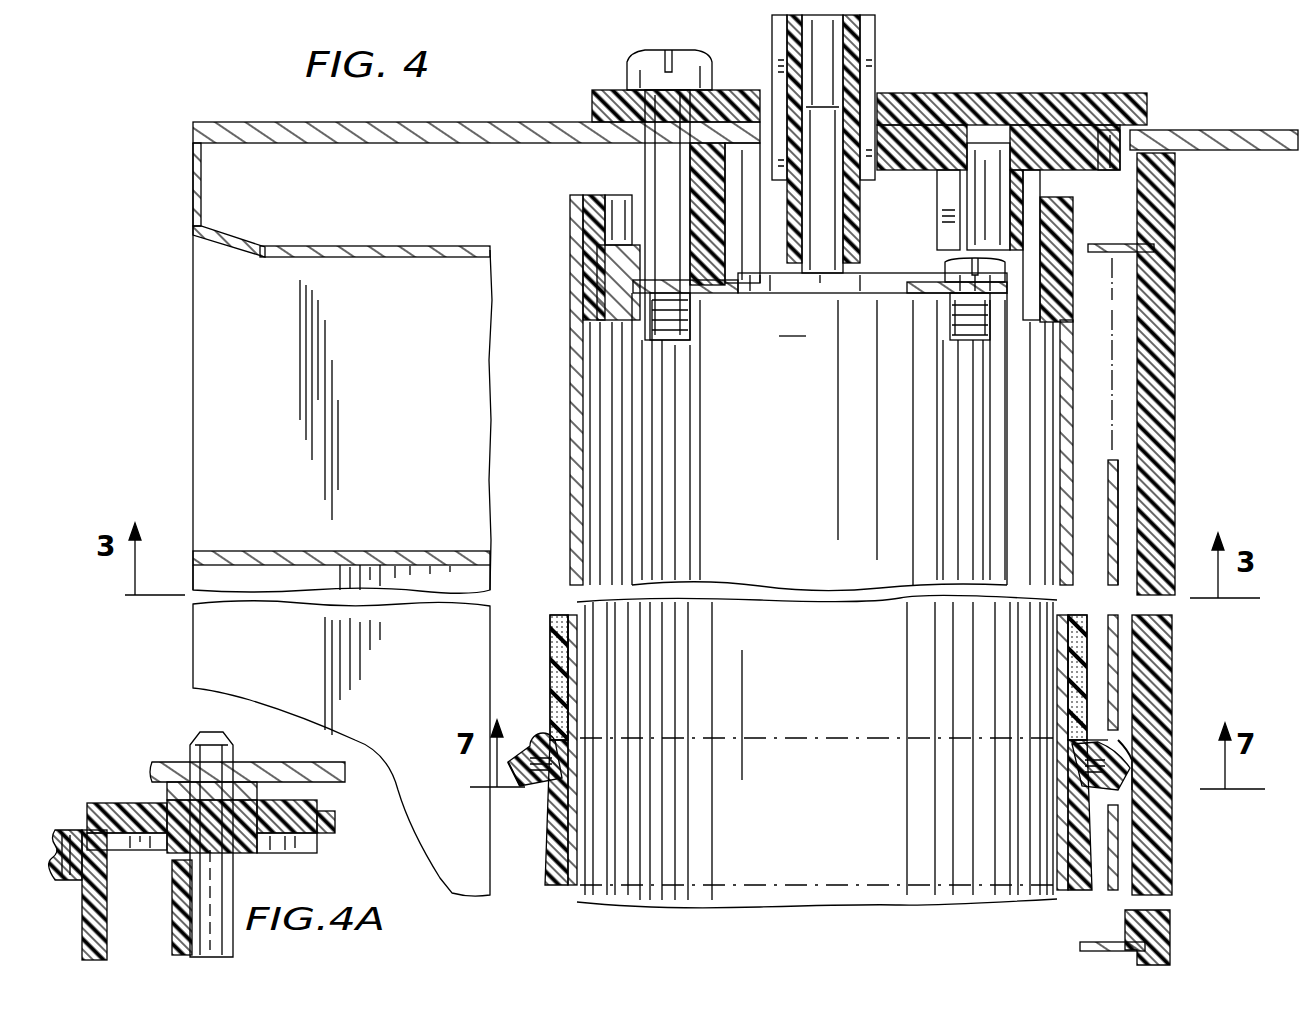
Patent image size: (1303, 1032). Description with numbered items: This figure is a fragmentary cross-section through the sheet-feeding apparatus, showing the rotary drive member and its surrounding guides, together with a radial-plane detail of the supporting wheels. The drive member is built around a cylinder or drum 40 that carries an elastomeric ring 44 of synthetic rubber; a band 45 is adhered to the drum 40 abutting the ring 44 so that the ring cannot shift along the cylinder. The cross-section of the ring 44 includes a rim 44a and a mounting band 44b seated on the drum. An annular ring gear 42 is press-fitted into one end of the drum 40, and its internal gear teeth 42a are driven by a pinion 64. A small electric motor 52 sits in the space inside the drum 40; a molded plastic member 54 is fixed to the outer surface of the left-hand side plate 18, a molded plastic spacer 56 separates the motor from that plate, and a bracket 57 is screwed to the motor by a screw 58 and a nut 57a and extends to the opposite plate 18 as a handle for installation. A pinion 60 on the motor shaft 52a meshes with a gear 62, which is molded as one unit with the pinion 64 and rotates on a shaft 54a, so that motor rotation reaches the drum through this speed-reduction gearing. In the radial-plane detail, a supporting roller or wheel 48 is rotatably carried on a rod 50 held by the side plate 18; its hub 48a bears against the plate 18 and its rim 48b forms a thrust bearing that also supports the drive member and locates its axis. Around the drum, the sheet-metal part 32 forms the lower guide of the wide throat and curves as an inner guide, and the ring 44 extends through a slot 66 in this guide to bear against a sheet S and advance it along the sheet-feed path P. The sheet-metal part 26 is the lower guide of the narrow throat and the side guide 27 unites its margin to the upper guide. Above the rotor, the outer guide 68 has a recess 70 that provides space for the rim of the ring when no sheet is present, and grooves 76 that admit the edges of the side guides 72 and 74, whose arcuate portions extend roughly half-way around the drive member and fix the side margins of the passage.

In FIG. 4, the side plate 18 is at (278, 122).
In FIG. 4A, the side plate 18 is at (288, 768).
In FIG. 4, the sheet-metal part 26 is at (264, 660).
In FIG. 4, the side guide 27 is at (296, 552).
In FIG. 4, the sheet-metal part 32 is at (255, 420).
In FIG. 4, the drum 40 is at (1073, 430).
In FIG. 4A, the drum 40 is at (107, 930).
In FIG. 4, the annular ring gear 42 is at (583, 200).
In FIG. 4A, the annular ring gear 42 is at (82, 840).
In FIG. 4, the internal gear teeth 42a is at (610, 195).
In FIG. 4, the elastomeric ring 44 is at (540, 740).
In FIG. 4, the rim 44a is at (522, 786).
In FIG. 4, the mounting band 44b is at (550, 848).
In FIG. 4, the band 45 is at (550, 655).
In FIG. 4A, the supporting roller 48 is at (258, 860).
In FIG. 4A, the hub 48a is at (167, 790).
In FIG. 4A, the rim 48b is at (317, 850).
In FIG. 4A, the rod 50 is at (195, 755).
In FIG. 4, the electric motor 52 is at (818, 590).
In FIG. 4, the motor shaft 52a is at (835, 210).
In FIG. 4, the member 54 is at (940, 93).
In FIG. 4, the shaft 54a is at (988, 140).
In FIG. 4, the spacer 56 is at (725, 238).
In FIG. 4, the bracket 57 is at (718, 292).
In FIG. 4, the nut 57a is at (950, 320).
In FIG. 4, the screw 58 is at (645, 60).
In FIG. 4, the pinion 60 is at (875, 48).
In FIG. 4, the gear 62 is at (1102, 130).
In FIG. 4, the pinion 64 is at (937, 236).
In FIG. 4, the slot 66 is at (1132, 745).
In FIG. 4, the outer guide 68 is at (1170, 895).
In FIG. 4A, the outer guide 68 is at (172, 896).
In FIG. 4, the groove 70 is at (1145, 770).
In FIG. 4, the side guide 72 is at (288, 248).
In FIG. 4, the side guide 74 is at (1090, 942).
In FIG. 4, the groove 76 is at (1100, 951).
In FIG. 4, the sheet-feed path P is at (1120, 540).
In FIG. 4, the sheet S is at (1132, 745).